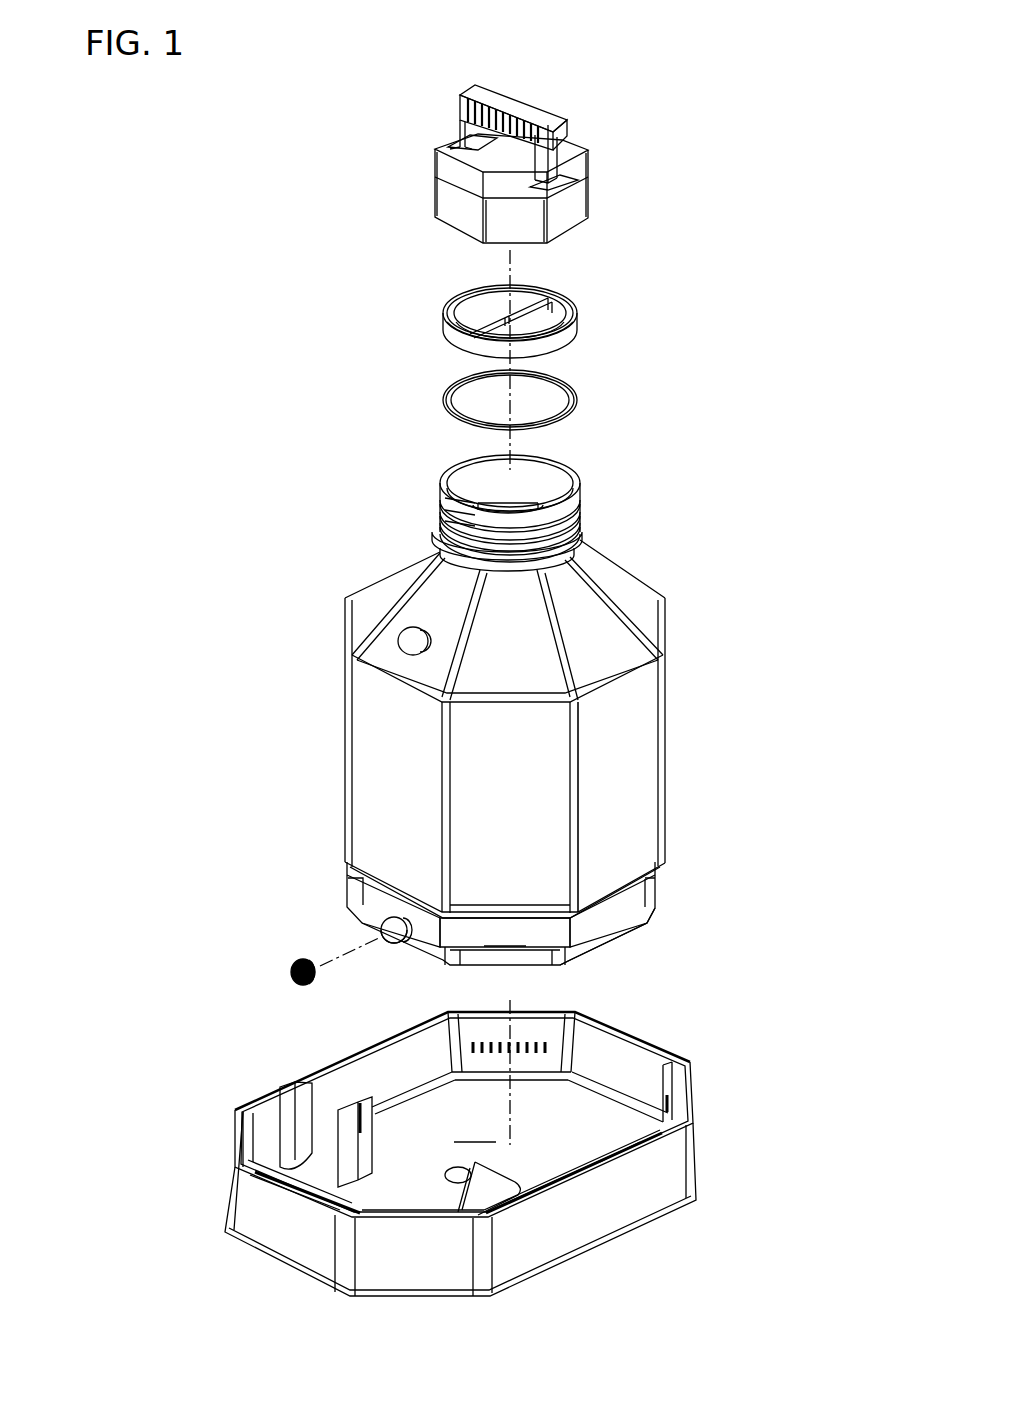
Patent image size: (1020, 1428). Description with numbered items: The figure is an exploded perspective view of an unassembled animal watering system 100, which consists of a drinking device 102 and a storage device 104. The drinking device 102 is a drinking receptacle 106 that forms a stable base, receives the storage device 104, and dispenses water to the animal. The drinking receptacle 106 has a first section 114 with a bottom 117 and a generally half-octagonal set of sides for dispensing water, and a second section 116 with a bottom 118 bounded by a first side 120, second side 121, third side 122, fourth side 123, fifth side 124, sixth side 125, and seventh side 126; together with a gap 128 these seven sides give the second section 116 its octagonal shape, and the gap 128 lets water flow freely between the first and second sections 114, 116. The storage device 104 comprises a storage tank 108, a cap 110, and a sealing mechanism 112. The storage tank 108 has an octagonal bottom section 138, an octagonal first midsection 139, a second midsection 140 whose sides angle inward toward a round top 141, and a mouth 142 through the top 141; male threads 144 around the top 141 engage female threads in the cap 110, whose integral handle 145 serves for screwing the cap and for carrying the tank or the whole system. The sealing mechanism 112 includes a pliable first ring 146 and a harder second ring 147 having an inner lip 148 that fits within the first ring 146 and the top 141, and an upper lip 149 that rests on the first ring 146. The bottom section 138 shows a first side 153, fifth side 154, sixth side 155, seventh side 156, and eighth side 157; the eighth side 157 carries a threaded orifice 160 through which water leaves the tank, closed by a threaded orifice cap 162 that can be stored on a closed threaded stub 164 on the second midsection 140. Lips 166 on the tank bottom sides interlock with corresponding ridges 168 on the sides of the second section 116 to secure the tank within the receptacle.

The animal watering system 100 is at (652, 120).
The drinking device 102 is at (708, 1080).
The storage device 104 is at (676, 632).
The drinking receptacle 106 is at (634, 1214).
The storage tank 108 is at (650, 738).
The cap 110 is at (585, 195).
The sealing mechanism 112 is at (630, 362).
The first section 114 is at (288, 1187).
The second section 116 is at (598, 1108).
The bottom 117 is at (312, 1200).
The bottom 118 is at (434, 1108).
The first side 120 is at (352, 1092).
The second side 121 is at (385, 1068).
The third side 122 is at (545, 1032).
The fourth side 123 is at (650, 1066).
The fifth side 124 is at (676, 1100).
The sixth side 125 is at (623, 1150).
The seventh side 126 is at (528, 1163).
The gap 128 is at (405, 1187).
The bottom section 138 is at (615, 952).
The first midsection 139 is at (338, 773).
The second midsection 140 is at (353, 562).
The top 141 is at (428, 468).
The mouth 142 is at (548, 483).
The male threads 144 is at (570, 530).
The handle 145 is at (524, 105).
The first ring 146 is at (568, 389).
The second ring 147 is at (578, 313).
The inner lip 148 is at (456, 340).
The upper lip 149 is at (449, 303).
The first side 153 is at (350, 883).
The fifth side 154 is at (655, 882).
The sixth side 155 is at (615, 946).
The seventh side 156 is at (505, 933).
The eighth side 157 is at (412, 948).
The orifice 160 is at (397, 917).
The orifice cap 162 is at (290, 975).
The stub 164 is at (398, 644).
The lips 166 is at (350, 896).
The ridges 168 is at (494, 1058).